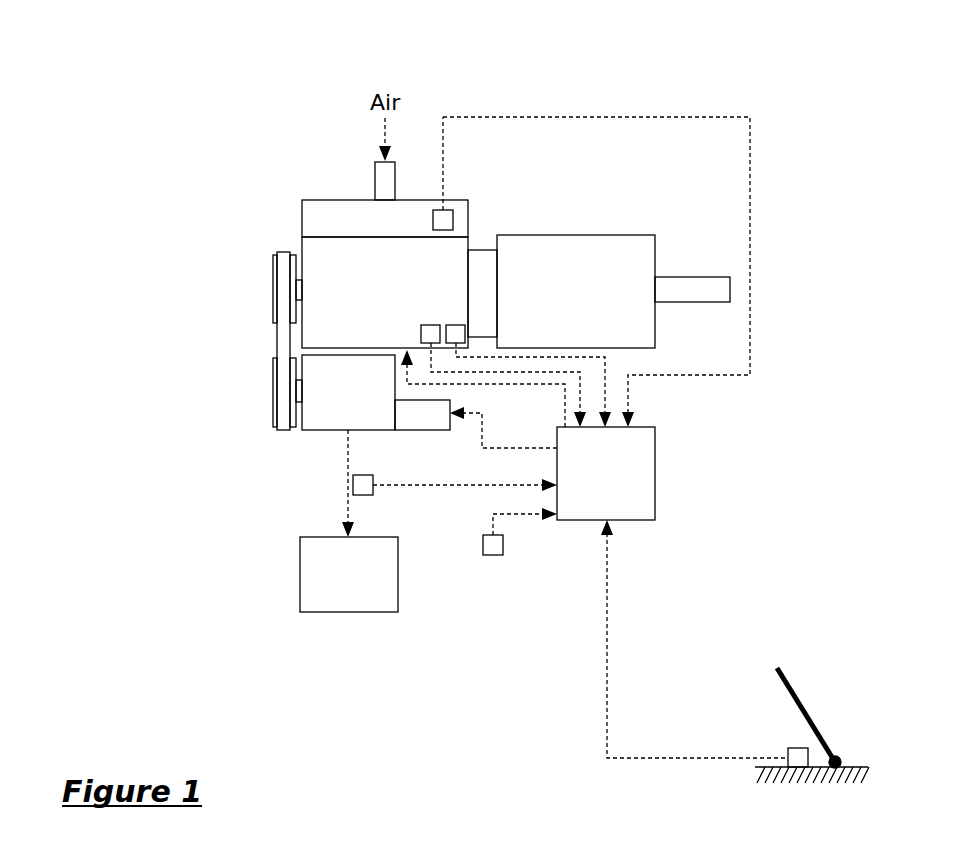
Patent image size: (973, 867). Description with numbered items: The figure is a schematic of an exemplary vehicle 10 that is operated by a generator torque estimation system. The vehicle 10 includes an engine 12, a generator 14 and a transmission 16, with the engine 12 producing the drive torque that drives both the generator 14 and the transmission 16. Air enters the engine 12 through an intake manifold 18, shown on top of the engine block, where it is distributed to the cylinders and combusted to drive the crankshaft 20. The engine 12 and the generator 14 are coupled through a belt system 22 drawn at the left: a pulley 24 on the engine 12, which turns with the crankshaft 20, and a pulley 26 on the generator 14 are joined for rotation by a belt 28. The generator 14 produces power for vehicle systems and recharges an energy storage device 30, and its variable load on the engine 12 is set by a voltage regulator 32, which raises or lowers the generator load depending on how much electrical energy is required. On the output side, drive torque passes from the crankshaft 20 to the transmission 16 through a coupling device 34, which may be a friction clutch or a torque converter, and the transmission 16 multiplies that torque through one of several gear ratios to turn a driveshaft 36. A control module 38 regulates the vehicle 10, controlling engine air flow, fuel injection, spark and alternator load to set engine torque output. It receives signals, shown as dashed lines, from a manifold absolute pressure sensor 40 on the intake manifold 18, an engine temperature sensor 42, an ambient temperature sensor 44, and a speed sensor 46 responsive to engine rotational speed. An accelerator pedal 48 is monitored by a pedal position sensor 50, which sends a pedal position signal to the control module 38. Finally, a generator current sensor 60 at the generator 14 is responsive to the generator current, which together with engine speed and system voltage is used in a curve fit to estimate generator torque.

The vehicle 10 is at (862, 128).
The engine 12 is at (474, 250).
The generator 14 is at (310, 430).
The transmission 16 is at (588, 235).
The intake manifold 18 is at (327, 200).
The crankshaft 20 is at (297, 258).
The belt system 22 is at (212, 303).
The pulley 24 is at (275, 280).
The pulley 26 is at (275, 390).
The belt 28 is at (279, 252).
The energy storage device 30 is at (300, 557).
The voltage regulator 32 is at (400, 430).
The coupling device 34 is at (486, 250).
The driveshaft 36 is at (692, 277).
The control module 38 is at (652, 427).
The manifold absolute pressure sensor 40 is at (432, 220).
The engine temperature sensor 42 is at (421, 333).
The ambient temperature sensor 44 is at (497, 555).
The speed sensor 46 is at (455, 325).
The accelerator pedal 48 is at (790, 683).
The pedal position sensor 50 is at (800, 748).
The generator current sensor 60 is at (365, 495).